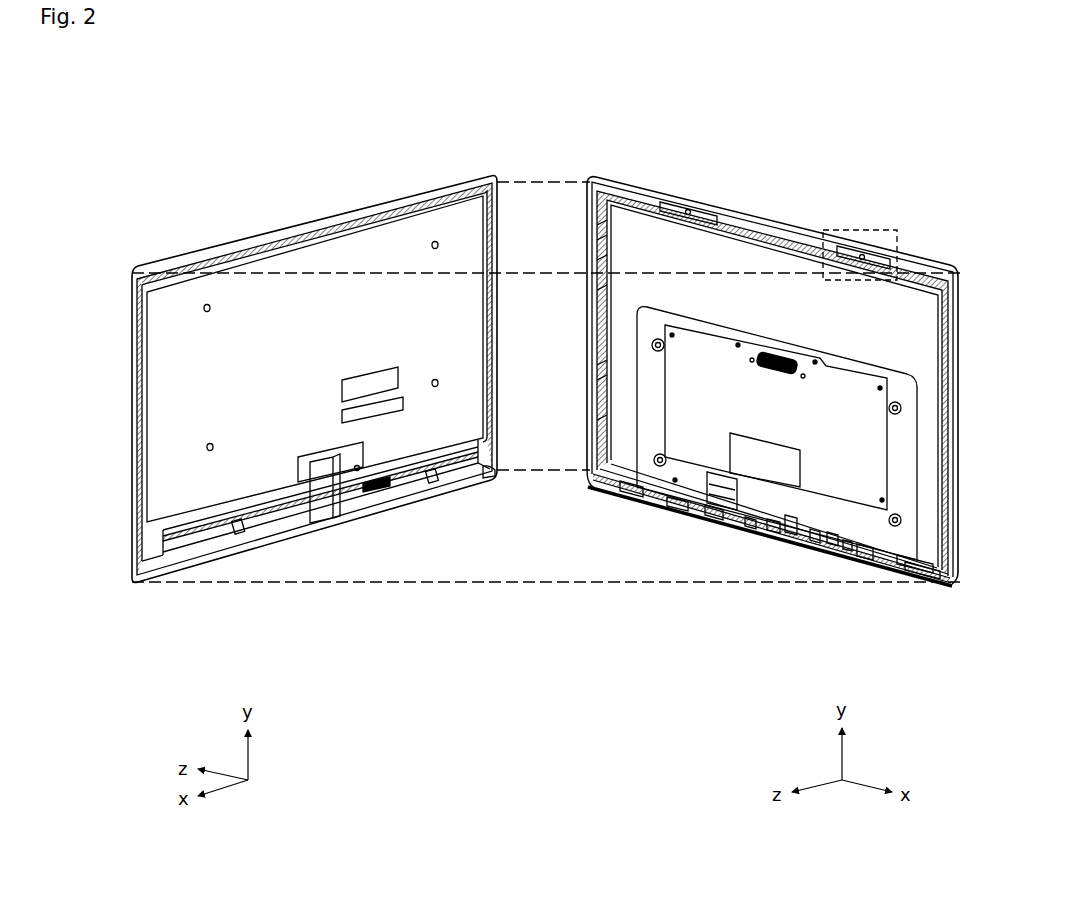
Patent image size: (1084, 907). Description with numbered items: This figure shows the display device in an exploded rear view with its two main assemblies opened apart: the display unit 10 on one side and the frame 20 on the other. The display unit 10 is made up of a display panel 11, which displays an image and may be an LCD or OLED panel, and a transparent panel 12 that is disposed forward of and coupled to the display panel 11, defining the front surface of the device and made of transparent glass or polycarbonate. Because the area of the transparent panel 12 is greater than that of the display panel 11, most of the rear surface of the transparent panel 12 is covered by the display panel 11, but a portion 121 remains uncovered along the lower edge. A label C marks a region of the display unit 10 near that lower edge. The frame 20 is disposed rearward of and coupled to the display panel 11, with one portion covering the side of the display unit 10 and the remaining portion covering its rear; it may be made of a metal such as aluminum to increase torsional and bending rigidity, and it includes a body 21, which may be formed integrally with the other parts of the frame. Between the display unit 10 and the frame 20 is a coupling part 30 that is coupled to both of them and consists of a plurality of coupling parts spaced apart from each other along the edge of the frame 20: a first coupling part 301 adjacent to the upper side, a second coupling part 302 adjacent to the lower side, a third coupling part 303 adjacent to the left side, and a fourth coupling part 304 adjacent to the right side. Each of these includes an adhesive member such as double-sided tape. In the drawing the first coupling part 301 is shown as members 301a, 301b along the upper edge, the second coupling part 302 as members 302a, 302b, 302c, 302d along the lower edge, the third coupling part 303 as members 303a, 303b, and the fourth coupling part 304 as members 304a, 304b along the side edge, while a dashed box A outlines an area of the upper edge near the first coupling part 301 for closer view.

The display unit 10 is at (230, 183).
The display panel 11 is at (173, 422).
The transparent panel 12 is at (165, 266).
The portion of the transparent panel not covered by the display panel 121 is at (140, 575).
The stand bracket C is at (320, 487).
The frame 20 is at (937, 252).
The body 21 is at (912, 310).
The coupling part 30 is at (448, 800).
The first coupling part 301 is at (835, 92).
The first upper coupling member 301a is at (836, 242).
The second upper coupling member 301b is at (703, 202).
The second coupling part 302 is at (690, 740).
The first lower connector 302a is at (877, 571).
The second lower connector 302b is at (840, 551).
The third lower connector 302c is at (697, 521).
The fourth lower connector 302d is at (653, 495).
The third coupling part 303 is at (955, 666).
The first lower coupling member 303a is at (893, 539).
The second lower coupling member 303b is at (937, 560).
The fourth coupling part 304 is at (615, 80).
The first side coupling member 304a is at (585, 217).
The second side coupling member 304b is at (587, 378).
The enlarged region A is at (848, 231).